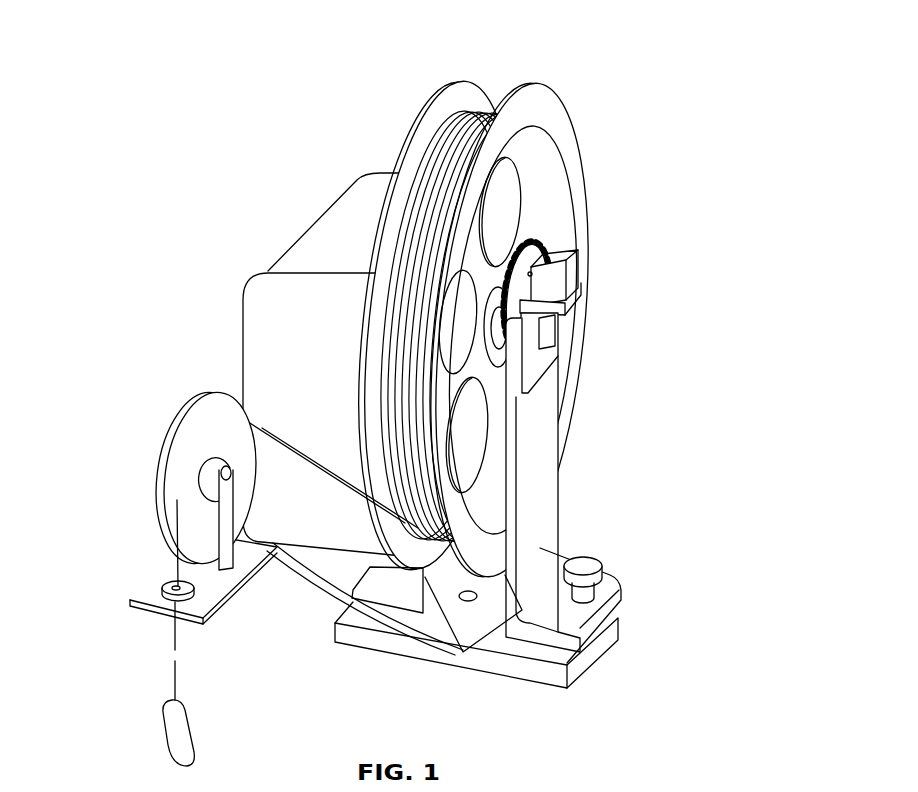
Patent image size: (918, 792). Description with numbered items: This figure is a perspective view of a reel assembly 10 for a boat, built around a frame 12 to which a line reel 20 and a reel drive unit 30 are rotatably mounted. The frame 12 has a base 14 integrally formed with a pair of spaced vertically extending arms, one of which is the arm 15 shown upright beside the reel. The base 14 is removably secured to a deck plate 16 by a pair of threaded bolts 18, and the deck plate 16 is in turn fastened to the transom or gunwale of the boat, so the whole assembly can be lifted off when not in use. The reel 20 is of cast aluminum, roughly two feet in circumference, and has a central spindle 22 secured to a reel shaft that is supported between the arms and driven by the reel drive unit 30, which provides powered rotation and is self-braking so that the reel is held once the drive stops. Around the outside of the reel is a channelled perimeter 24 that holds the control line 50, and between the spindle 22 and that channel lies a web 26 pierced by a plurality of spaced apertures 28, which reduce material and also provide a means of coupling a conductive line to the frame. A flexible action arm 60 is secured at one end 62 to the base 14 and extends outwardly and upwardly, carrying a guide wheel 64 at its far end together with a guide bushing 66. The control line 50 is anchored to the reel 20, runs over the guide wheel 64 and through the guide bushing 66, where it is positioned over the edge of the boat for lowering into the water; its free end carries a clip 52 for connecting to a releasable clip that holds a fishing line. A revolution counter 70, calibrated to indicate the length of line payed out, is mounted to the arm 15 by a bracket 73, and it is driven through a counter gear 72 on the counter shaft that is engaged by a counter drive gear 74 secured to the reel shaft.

The reel assembly 10 is at (197, 232).
The frame 12 is at (583, 482).
The base 14 is at (622, 587).
The arm 15 is at (553, 493).
The deck plate 16 is at (585, 665).
The threaded bolts 18 is at (600, 563).
The line reel 20 is at (545, 330).
The central spindle 22 is at (503, 303).
The channelled perimeter 24 is at (500, 94).
The web 26 is at (532, 218).
The apertures 28 is at (510, 205).
The reel drive unit 30 is at (274, 258).
The control line 50 is at (292, 442).
The clip 52 is at (192, 735).
The flexible action arm 60 is at (291, 592).
The end of action arm 62 is at (477, 617).
The guide wheel 64 is at (182, 422).
The guide bushing 66 is at (165, 583).
The revolution counter 70 is at (562, 278).
The counter gear 72 is at (533, 253).
The bracket 73 is at (548, 333).
The counter drive gear 74 is at (500, 347).